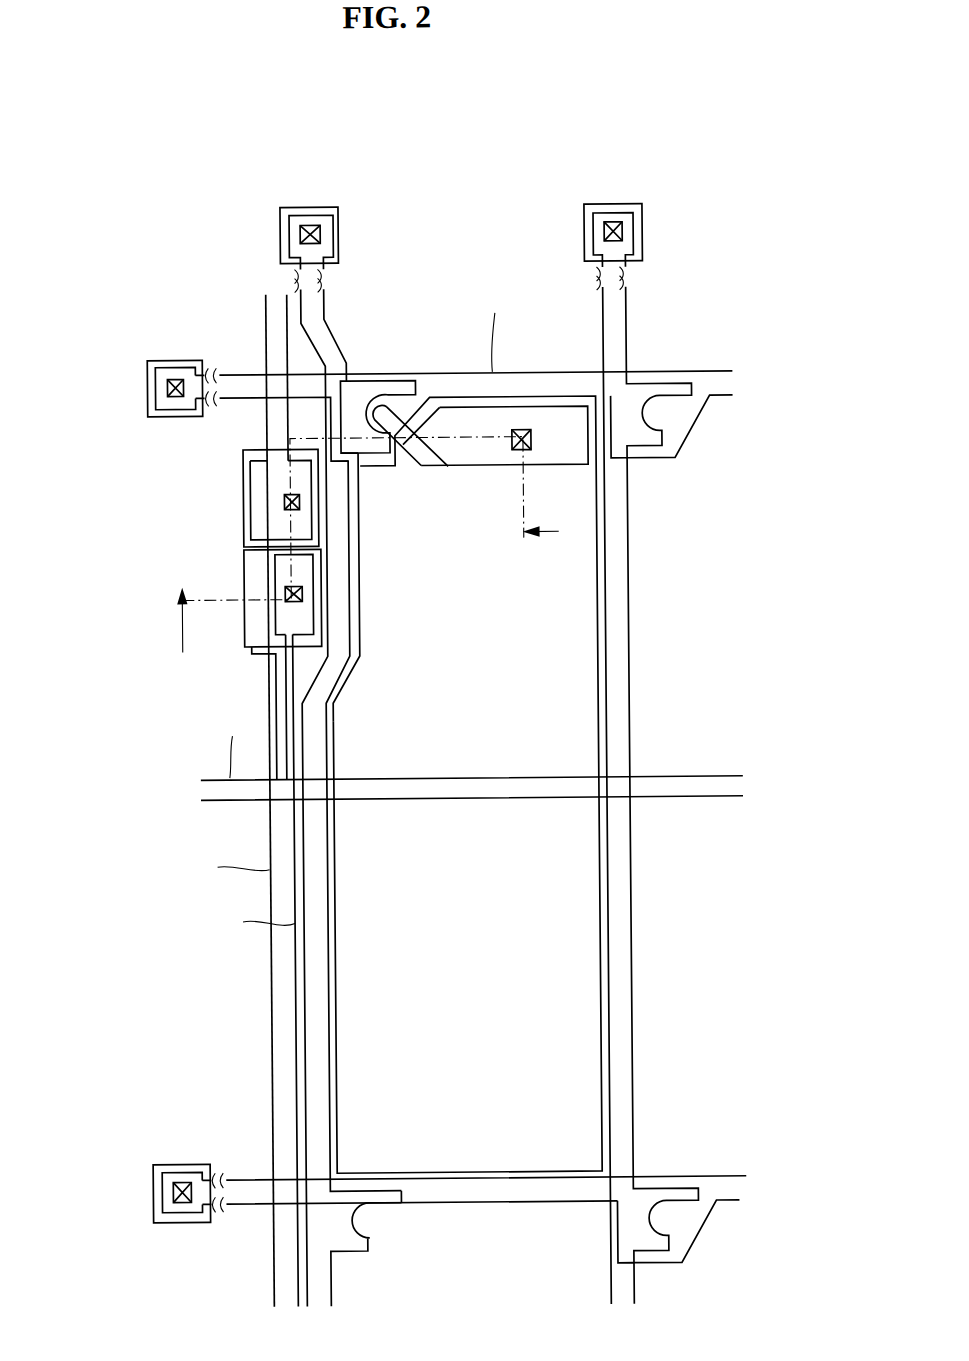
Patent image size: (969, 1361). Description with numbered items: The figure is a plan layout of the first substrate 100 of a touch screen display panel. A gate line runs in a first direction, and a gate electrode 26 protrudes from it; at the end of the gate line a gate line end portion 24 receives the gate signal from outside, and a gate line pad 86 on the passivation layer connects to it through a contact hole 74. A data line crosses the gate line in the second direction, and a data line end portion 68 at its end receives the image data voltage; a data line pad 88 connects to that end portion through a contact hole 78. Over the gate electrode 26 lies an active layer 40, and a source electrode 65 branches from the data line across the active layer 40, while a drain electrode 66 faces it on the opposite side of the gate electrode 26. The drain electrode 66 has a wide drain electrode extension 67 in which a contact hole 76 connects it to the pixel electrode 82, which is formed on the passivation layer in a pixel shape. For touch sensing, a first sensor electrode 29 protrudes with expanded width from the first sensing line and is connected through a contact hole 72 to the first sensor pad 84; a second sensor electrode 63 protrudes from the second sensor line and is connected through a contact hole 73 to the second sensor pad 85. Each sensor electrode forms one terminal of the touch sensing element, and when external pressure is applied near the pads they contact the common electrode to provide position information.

The first substrate 100 is at (572, 163).
The data line pad 88 is at (306, 208).
The contact hole 78 is at (316, 221).
The data line end portion 68 is at (346, 227).
The gate line end portion 24 is at (180, 357).
The gate line pad 86 is at (152, 372).
The contact hole 74 is at (162, 394).
The source electrode 65 is at (390, 395).
The active layer 40 is at (424, 379).
The contact hole 76 is at (524, 429).
The drain electrode extension 67 is at (493, 466).
The drain electrode 66 is at (431, 465).
The gate electrode 26 is at (349, 464).
The second sensor electrode 63 is at (247, 476).
The contact hole 73 is at (286, 498).
The second sensor pad 85 is at (246, 543).
The contact hole 72 is at (305, 591).
The first sensor electrode 29 is at (315, 612).
The first sensor pad 84 is at (362, 639).
The pixel electrode 82 is at (335, 965).